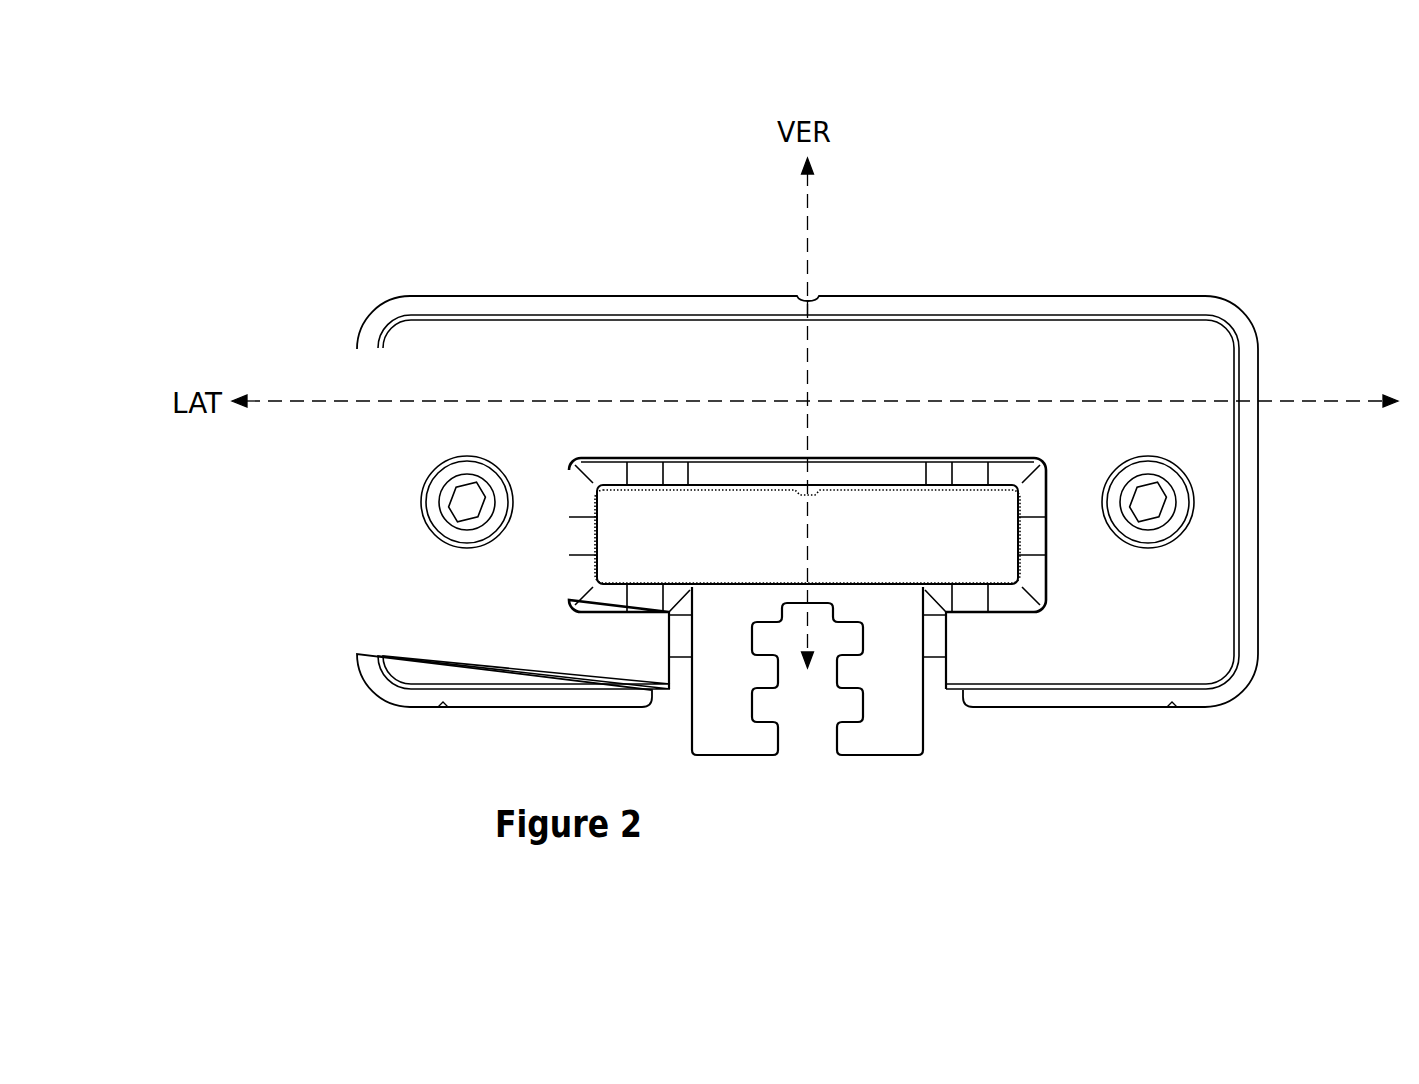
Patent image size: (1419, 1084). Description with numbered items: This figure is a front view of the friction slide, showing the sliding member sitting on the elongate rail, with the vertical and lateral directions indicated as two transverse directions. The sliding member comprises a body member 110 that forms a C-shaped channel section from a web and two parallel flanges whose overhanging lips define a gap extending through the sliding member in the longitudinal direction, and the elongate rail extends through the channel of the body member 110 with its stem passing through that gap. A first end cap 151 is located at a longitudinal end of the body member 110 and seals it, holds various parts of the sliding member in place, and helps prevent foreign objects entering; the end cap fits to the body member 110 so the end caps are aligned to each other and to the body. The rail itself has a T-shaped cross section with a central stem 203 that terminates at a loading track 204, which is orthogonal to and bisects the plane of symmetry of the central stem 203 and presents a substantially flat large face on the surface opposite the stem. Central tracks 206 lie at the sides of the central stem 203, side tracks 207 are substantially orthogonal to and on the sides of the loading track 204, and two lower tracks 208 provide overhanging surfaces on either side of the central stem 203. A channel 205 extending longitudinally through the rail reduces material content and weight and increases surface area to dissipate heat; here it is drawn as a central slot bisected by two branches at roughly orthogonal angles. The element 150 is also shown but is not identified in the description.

The body member 110 is at (1225, 300).
The mounting body 150 is at (447, 314).
The first end cap 151 is at (438, 505).
The central stem 203 is at (893, 673).
The loading track 204 is at (858, 487).
The channel 205 is at (807, 718).
The central tracks 206 is at (952, 688).
The side tracks 207 is at (1023, 543).
The lower tracks 208 is at (636, 587).